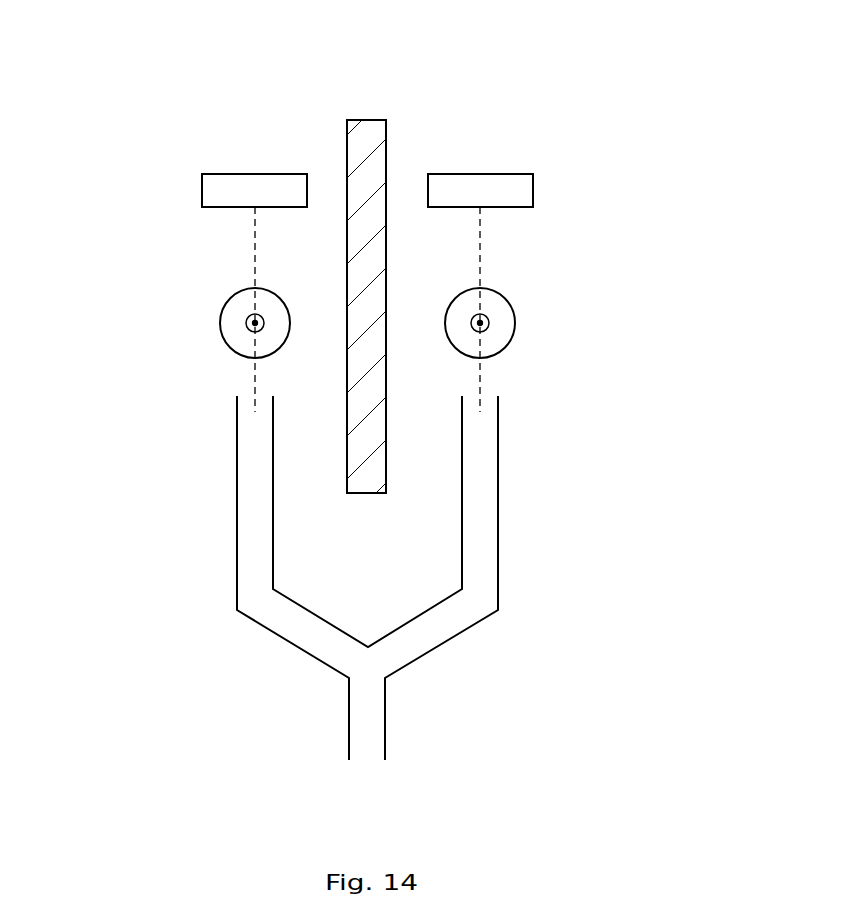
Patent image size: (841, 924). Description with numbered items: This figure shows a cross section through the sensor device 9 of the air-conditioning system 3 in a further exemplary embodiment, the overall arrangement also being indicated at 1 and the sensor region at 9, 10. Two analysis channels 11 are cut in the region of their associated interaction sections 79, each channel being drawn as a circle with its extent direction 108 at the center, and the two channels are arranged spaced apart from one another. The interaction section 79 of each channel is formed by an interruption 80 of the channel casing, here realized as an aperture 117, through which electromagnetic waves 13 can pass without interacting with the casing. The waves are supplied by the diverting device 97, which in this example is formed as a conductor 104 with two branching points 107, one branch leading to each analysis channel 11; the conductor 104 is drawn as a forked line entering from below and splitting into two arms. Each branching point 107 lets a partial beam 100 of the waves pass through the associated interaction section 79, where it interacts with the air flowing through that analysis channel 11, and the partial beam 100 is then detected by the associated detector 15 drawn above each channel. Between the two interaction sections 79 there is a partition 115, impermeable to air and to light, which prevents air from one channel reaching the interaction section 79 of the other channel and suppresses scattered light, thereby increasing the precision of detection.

The machine tool 1 is at (588, 128).
The air-conditioning system 3 is at (592, 205).
The sensor device 9 is at (112, 103).
The cooling lubricant supply 10 is at (146, 155).
The analysis channel 11 is at (373, 322).
The electromagnetic waves 13 is at (373, 309).
The detector 15 is at (258, 195).
The interaction section 79 is at (373, 322).
The interruption 80 is at (373, 322).
The diverting device 97 is at (370, 578).
The partial beam 100 is at (252, 240).
The conductor 104 is at (237, 497).
The branching point 107 is at (370, 578).
The extent direction 108 is at (262, 320).
The partition 115 is at (366, 130).
The aperture 117 is at (373, 322).